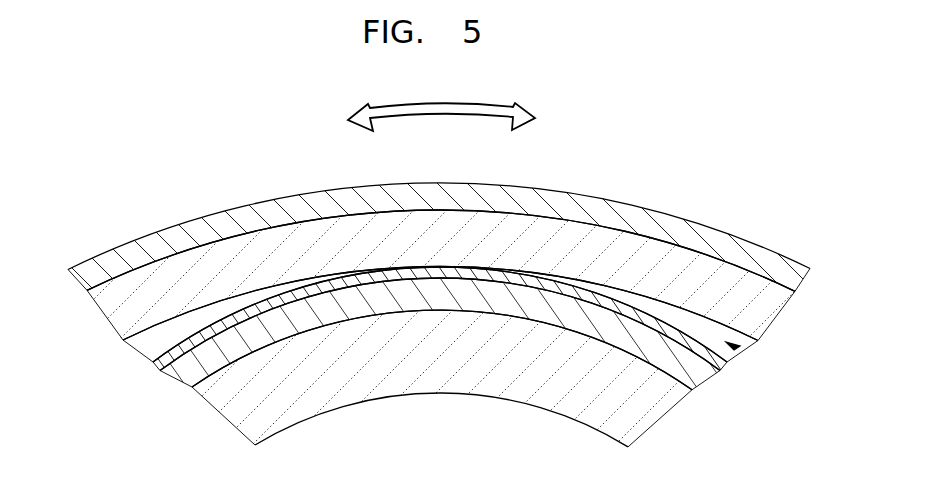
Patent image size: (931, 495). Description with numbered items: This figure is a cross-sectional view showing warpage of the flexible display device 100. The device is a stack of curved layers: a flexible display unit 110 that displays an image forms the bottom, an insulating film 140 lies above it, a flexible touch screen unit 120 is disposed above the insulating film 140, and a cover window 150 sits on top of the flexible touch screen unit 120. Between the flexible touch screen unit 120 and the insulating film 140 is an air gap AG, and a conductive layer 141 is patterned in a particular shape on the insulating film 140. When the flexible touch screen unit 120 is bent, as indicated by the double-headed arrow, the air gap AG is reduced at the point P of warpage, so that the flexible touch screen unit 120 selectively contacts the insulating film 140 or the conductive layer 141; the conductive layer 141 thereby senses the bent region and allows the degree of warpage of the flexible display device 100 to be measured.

The flexible display device 100 is at (678, 148).
The cover window 150 is at (790, 278).
The flexible touch screen unit 120 is at (763, 315).
The air gap AG is at (730, 345).
The conductive layer 141 is at (712, 357).
The insulating film 140 is at (690, 373).
The flexible display unit 110 is at (640, 410).
The point of warpage P is at (441, 267).